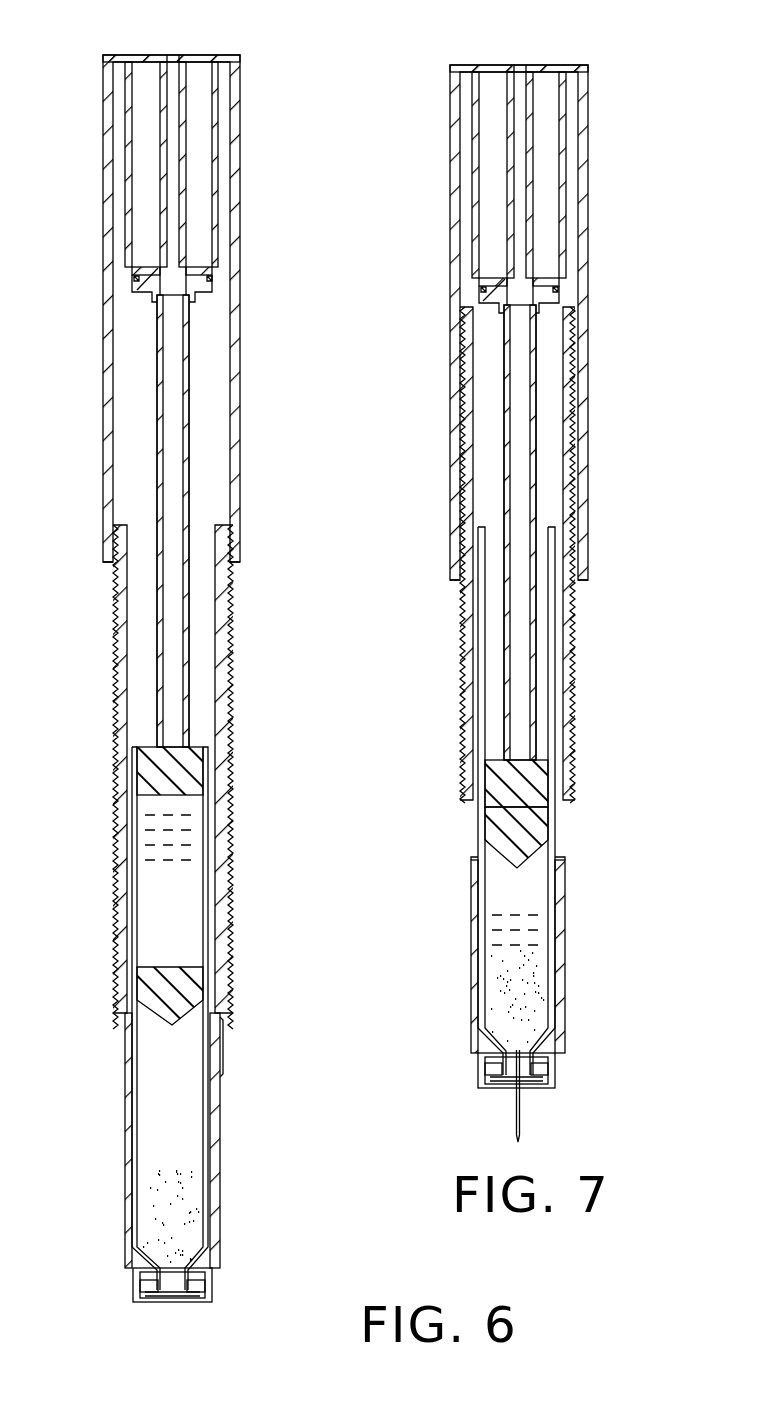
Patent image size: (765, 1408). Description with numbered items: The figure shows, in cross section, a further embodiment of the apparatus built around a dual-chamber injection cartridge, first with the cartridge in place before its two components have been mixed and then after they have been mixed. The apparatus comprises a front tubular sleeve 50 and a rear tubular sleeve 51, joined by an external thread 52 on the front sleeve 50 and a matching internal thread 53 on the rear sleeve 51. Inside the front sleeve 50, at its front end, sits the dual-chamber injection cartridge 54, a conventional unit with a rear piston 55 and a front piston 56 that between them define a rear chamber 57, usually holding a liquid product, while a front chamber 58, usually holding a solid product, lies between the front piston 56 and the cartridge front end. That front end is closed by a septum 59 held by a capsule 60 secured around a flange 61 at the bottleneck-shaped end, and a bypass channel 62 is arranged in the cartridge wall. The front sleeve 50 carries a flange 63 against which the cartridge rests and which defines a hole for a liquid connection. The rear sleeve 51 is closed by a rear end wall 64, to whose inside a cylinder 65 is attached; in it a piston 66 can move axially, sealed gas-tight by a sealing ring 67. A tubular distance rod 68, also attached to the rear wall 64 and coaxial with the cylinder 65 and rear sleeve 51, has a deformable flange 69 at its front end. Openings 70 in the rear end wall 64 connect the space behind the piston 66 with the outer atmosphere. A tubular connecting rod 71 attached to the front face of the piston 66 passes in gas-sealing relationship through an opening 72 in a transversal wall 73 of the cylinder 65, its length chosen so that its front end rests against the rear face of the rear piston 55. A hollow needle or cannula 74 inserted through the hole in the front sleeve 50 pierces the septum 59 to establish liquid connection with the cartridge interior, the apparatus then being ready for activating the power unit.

In FIG. 6, the front tubular sleeve 50 is at (128, 1100).
In FIG. 7, the front tubular sleeve 50 is at (474, 940).
In FIG. 6, the rear tubular sleeve 51 is at (105, 305).
In FIG. 7, the rear tubular sleeve 51 is at (452, 220).
In FIG. 6, the external thread 52 is at (115, 610).
In FIG. 7, the external thread 52 is at (462, 635).
In FIG. 6, the internal thread 53 is at (240, 560).
In FIG. 7, the internal thread 53 is at (588, 580).
In FIG. 6, the dual-chamber injection cartridge 54 is at (137, 905).
In FIG. 7, the dual-chamber injection cartridge 54 is at (483, 870).
In FIG. 6, the rear piston 55 is at (172, 790).
In FIG. 7, the rear piston 55 is at (500, 785).
In FIG. 6, the front piston 56 is at (172, 1012).
In FIG. 7, the front piston 56 is at (500, 835).
In FIG. 6, the rear chamber 57 is at (171, 848).
In FIG. 6, the front chamber 58 is at (171, 1176).
In FIG. 7, the front chamber 58 is at (517, 954).
In FIG. 6, the septum 59 is at (160, 1298).
In FIG. 7, the septum 59 is at (507, 1082).
In FIG. 6, the capsule 60 is at (195, 1285).
In FIG. 7, the capsule 60 is at (545, 1065).
In FIG. 6, the flange 61 is at (150, 1285).
In FIG. 7, the flange 61 is at (495, 1070).
In FIG. 6, the bypass channel 62 is at (221, 1045).
In FIG. 7, the bypass channel 62 is at (565, 862).
In FIG. 6, the flange 63 is at (205, 1302).
In FIG. 7, the flange 63 is at (555, 1088).
In FIG. 6, the rear end wall 64 is at (122, 55).
In FIG. 7, the rear end wall 64 is at (463, 65).
In FIG. 6, the cylinder 65 is at (128, 135).
In FIG. 7, the cylinder 65 is at (475, 135).
In FIG. 6, the piston 66 is at (205, 270).
In FIG. 7, the piston 66 is at (553, 280).
In FIG. 6, the sealing ring 67 is at (212, 279).
In FIG. 7, the sealing ring 67 is at (559, 290).
In FIG. 6, the tubular distance rod 68 is at (182, 145).
In FIG. 7, the tubular distance rod 68 is at (532, 150).
In FIG. 6, the deformable flange 69 is at (160, 268).
In FIG. 7, the deformable flange 69 is at (507, 278).
In FIG. 6, the openings 70 is at (184, 62).
In FIG. 7, the openings 70 is at (531, 72).
In FIG. 6, the tubular connecting rod 71 is at (189, 425).
In FIG. 7, the tubular connecting rod 71 is at (536, 435).
In FIG. 6, the opening 72 is at (195, 302).
In FIG. 7, the opening 72 is at (545, 318).
In FIG. 6, the transversal wall 73 is at (150, 300).
In FIG. 7, the transversal wall 73 is at (470, 310).
In FIG. 7, the hollow needle 74 is at (519, 1130).